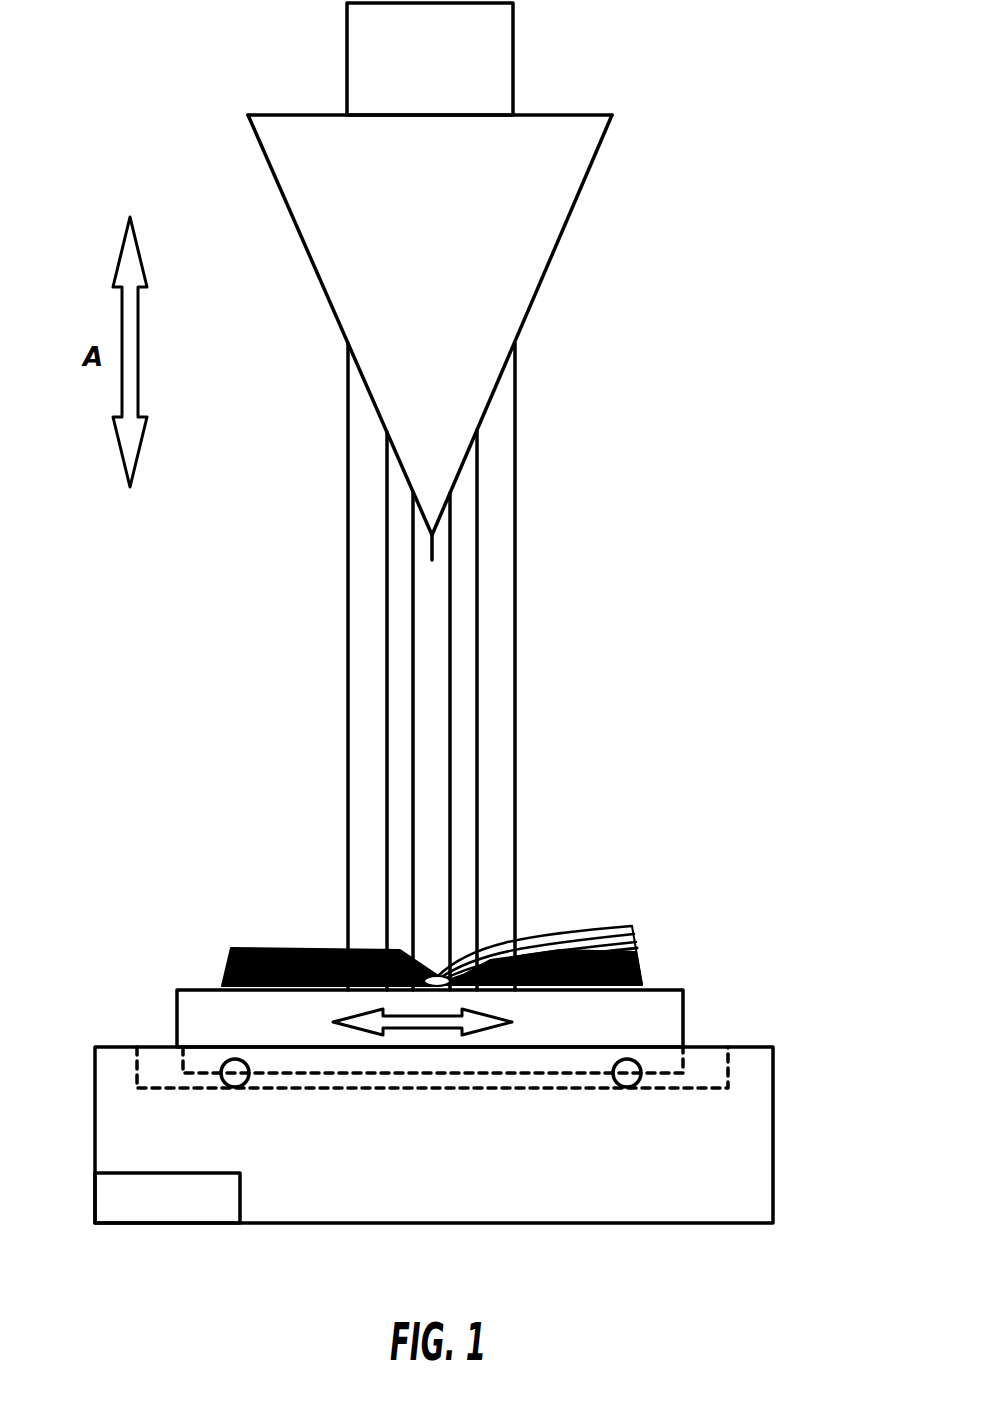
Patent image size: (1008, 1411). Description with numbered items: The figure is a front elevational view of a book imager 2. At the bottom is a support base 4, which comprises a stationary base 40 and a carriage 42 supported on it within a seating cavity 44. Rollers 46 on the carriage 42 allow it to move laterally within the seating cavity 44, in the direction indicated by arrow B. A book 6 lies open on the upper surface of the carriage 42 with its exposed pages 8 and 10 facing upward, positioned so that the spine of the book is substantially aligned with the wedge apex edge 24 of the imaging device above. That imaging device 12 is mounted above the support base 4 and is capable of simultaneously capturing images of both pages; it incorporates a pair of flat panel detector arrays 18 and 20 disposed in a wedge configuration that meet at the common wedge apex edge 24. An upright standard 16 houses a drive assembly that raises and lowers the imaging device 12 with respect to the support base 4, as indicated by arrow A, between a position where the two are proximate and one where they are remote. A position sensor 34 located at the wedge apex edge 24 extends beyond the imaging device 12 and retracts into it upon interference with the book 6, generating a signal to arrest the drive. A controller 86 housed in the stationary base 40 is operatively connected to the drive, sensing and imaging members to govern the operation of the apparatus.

The book imager 2 is at (229, 70).
The imaging device 12 is at (606, 165).
The flat panel detector array 20 is at (312, 273).
The flat panel detector array 18 is at (548, 267).
The upright standard 16 is at (527, 667).
The wedge apex edge 24 is at (432, 540).
The position sensor 34 is at (433, 553).
The book 6 is at (650, 955).
The page 10 is at (252, 948).
The page 8 is at (562, 932).
The support base 4 is at (748, 1020).
The carriage 42 is at (200, 1018).
The seating cavity 44 is at (160, 1088).
The rollers 46 is at (235, 1087).
The stationary base 40 is at (775, 1129).
The controller 86 is at (150, 1197).